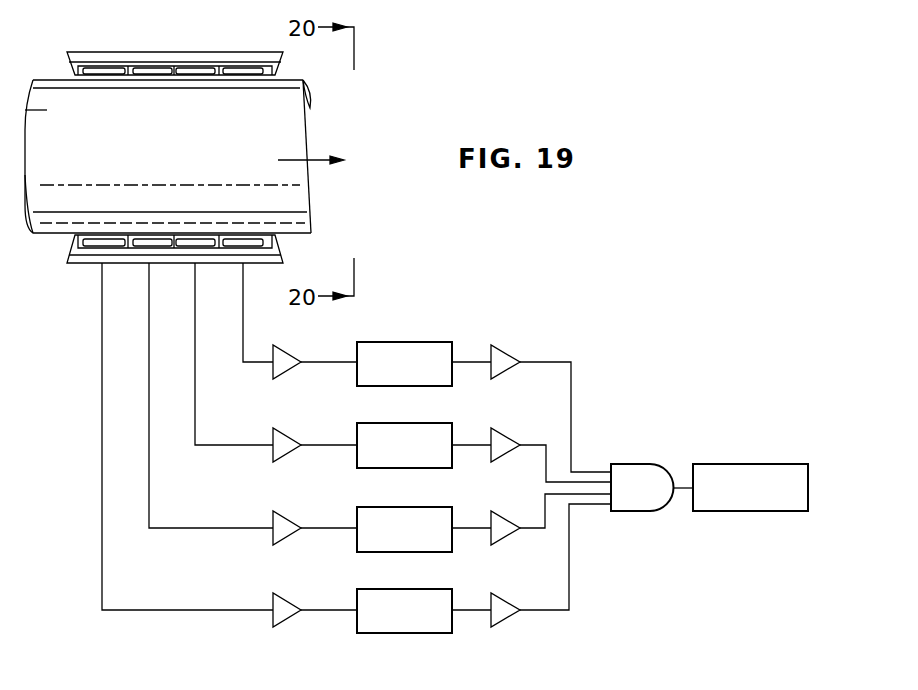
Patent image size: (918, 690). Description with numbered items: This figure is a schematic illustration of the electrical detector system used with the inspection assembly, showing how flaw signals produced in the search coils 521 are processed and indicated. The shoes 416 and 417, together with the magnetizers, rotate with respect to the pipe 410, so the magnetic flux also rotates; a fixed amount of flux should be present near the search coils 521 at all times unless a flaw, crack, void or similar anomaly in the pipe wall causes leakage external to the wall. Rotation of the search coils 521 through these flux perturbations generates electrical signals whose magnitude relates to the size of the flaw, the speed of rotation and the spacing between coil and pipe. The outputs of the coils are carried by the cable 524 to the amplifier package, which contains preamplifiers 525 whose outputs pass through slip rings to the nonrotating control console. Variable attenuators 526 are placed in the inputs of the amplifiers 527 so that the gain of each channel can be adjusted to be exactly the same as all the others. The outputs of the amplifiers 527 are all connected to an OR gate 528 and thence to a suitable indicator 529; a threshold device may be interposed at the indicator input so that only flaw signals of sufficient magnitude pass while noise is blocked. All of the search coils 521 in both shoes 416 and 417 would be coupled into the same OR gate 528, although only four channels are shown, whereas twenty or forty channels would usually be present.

The pipe 410 is at (297, 205).
The shoe 416 is at (241, 57).
The shoe 417 is at (75, 261).
The search coils 521 is at (193, 72).
The cable 524 is at (195, 387).
The preamplifiers 525 is at (290, 369).
The variable attenuators 526 is at (383, 386).
The amplifiers 527 is at (510, 369).
The OR gate 528 is at (633, 464).
The indicator 529 is at (740, 464).